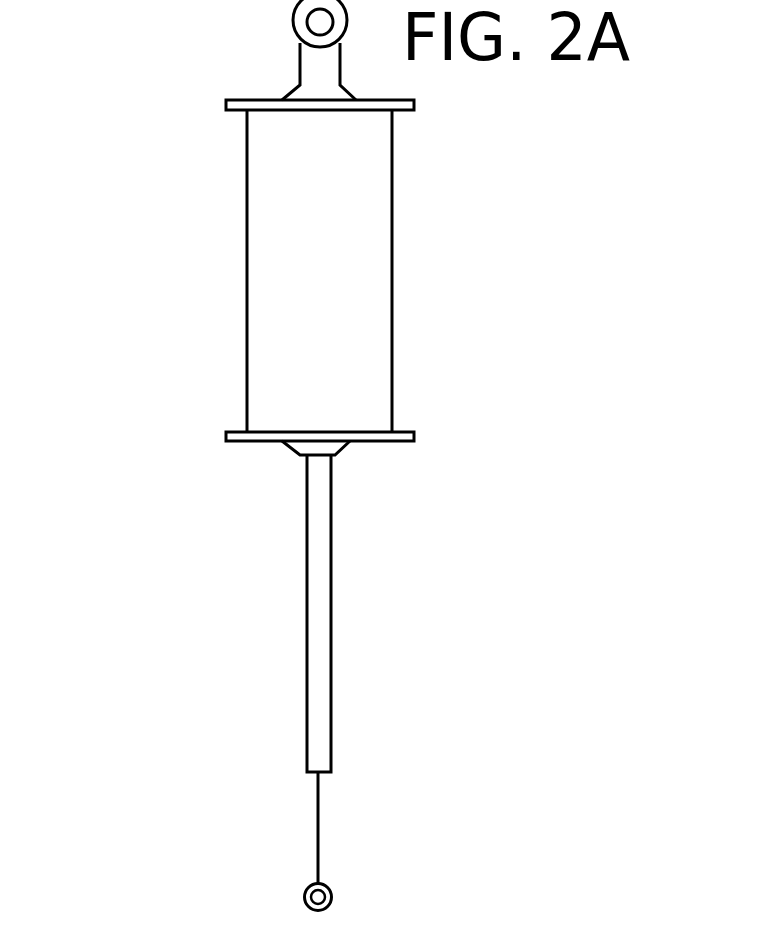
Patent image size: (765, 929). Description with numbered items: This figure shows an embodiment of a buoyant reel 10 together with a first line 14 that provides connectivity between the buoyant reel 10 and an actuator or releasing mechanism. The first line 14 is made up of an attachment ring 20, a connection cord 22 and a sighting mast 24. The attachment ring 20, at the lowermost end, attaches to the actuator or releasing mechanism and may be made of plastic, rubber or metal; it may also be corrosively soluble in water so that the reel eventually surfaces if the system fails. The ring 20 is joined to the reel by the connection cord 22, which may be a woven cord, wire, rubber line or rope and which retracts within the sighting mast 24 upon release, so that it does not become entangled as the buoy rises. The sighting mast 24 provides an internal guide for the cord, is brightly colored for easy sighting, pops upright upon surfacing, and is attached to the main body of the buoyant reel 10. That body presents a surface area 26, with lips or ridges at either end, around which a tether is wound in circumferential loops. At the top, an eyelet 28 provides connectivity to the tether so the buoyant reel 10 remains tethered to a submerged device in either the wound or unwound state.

The buoyant reel 10 is at (200, 322).
The first line 14 is at (258, 700).
The attachment ring 20 is at (332, 887).
The connection cord 22 is at (327, 825).
The sighting mast 24 is at (325, 676).
The surface area 26 is at (365, 292).
The eyelet 28 is at (297, 48).